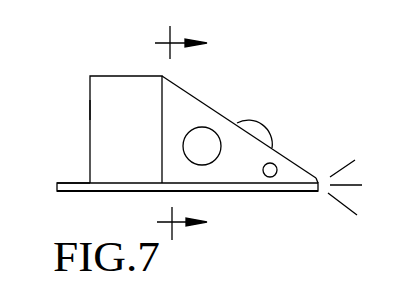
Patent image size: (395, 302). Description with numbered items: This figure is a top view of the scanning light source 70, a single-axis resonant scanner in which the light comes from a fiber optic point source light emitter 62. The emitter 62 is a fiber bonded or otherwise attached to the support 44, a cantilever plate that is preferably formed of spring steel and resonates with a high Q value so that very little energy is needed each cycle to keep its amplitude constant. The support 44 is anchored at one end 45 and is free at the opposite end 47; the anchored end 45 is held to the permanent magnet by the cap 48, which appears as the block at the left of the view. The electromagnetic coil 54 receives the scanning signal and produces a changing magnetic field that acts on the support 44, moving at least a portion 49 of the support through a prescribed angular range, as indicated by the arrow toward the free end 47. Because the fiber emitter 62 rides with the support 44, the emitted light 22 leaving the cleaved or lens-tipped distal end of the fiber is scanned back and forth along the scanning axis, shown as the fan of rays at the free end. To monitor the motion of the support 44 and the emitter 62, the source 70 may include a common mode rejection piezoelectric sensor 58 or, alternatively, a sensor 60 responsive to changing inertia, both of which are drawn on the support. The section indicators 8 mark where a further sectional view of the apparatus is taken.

The section line 8- 8 is at (181, 130).
The emitted light 22 is at (345, 207).
The support 44 is at (199, 99).
The anchored end 45 is at (90, 110).
The free end 47 is at (317, 180).
The cap 48 is at (117, 140).
The portion of the support 49 is at (316, 146).
The electromagnetic coil 54 is at (259, 125).
The common mode rejection piezoelectric sensor 58 is at (202, 146).
The sensor responsive to changing inertia 60 is at (274, 164).
The fiber optic point source light emitter 62 is at (75, 181).
The scanning light source 70 is at (250, 76).